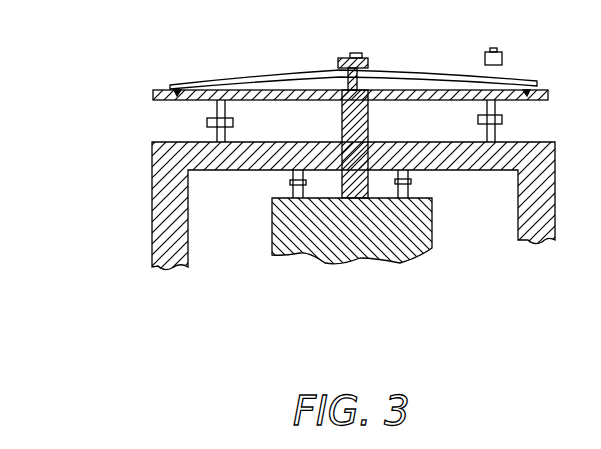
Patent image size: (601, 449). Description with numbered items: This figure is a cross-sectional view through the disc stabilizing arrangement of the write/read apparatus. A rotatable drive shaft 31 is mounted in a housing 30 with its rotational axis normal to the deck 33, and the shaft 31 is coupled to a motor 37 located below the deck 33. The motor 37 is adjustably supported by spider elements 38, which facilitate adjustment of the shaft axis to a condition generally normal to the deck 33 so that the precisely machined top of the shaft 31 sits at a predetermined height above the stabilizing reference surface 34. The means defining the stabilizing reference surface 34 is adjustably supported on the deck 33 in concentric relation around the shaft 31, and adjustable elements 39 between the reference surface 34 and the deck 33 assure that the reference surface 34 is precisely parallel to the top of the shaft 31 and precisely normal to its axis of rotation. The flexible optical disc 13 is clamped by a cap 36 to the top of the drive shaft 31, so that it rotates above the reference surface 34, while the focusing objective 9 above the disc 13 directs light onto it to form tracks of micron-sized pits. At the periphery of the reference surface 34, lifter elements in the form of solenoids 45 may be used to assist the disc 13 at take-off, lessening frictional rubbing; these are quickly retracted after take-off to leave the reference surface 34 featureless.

The focusing objective 9 is at (490, 50).
The optical disc 13 is at (414, 80).
The housing 30 is at (113, 216).
The drive shaft 31 is at (342, 120).
The deck 33 is at (152, 142).
The stabilizing reference surface 34 is at (160, 90).
The cap 36 is at (366, 59).
The motor 37 is at (418, 248).
The spider elements 38 is at (292, 182).
The adjustable elements 39 is at (233, 123).
The solenoids 45 is at (168, 100).